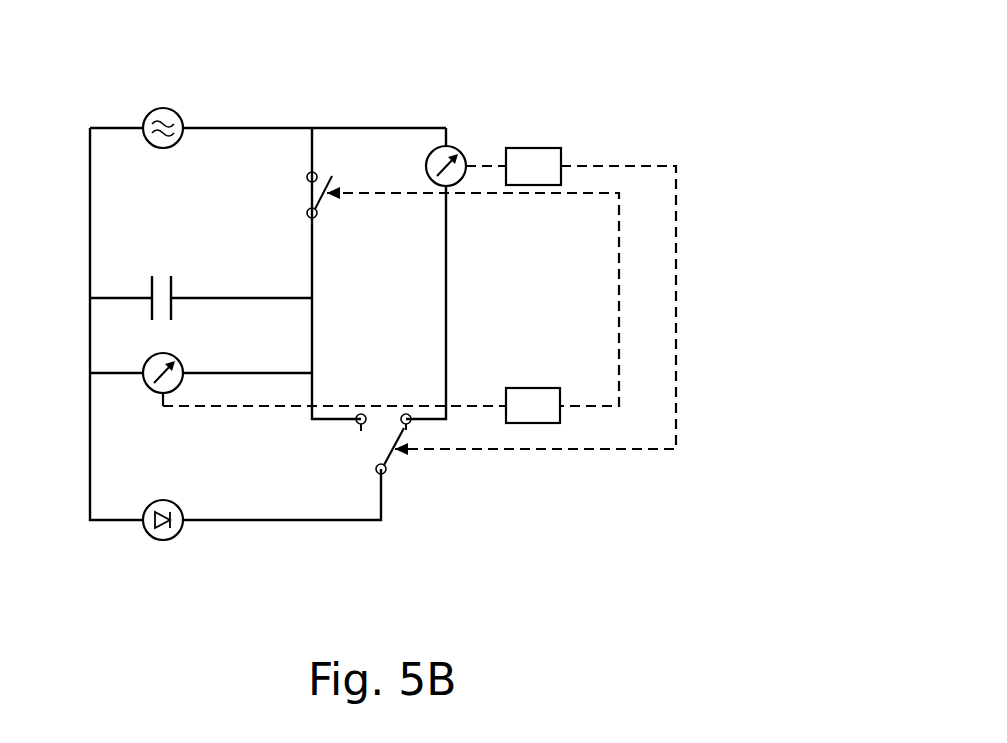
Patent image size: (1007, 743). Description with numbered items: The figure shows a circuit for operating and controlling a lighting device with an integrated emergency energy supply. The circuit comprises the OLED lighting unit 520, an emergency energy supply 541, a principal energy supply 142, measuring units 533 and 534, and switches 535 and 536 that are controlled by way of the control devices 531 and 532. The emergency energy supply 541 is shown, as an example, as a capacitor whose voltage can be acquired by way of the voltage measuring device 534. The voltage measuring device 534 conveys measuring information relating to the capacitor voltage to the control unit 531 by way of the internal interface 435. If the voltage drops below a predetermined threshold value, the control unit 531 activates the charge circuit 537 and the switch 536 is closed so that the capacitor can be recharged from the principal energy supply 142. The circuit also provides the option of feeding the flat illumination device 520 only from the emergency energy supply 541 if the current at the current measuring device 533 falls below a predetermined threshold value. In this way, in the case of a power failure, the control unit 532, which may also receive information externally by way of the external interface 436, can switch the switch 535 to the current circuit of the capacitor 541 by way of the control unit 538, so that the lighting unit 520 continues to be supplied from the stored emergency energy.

The principal energy supply 142 is at (162, 108).
The emergency energy supply 541 is at (160, 277).
The switch 536 is at (305, 197).
The charge circuit 537 is at (352, 193).
The current measuring device 533 is at (448, 144).
The external interface 436 is at (483, 163).
The control unit 532 is at (555, 155).
The control unit 538 is at (432, 452).
The control unit 531 is at (530, 424).
The voltage measuring device 534 is at (158, 393).
The internal interface 435 is at (227, 407).
The switch 535 is at (370, 448).
The OLED lighting unit 520 is at (168, 540).